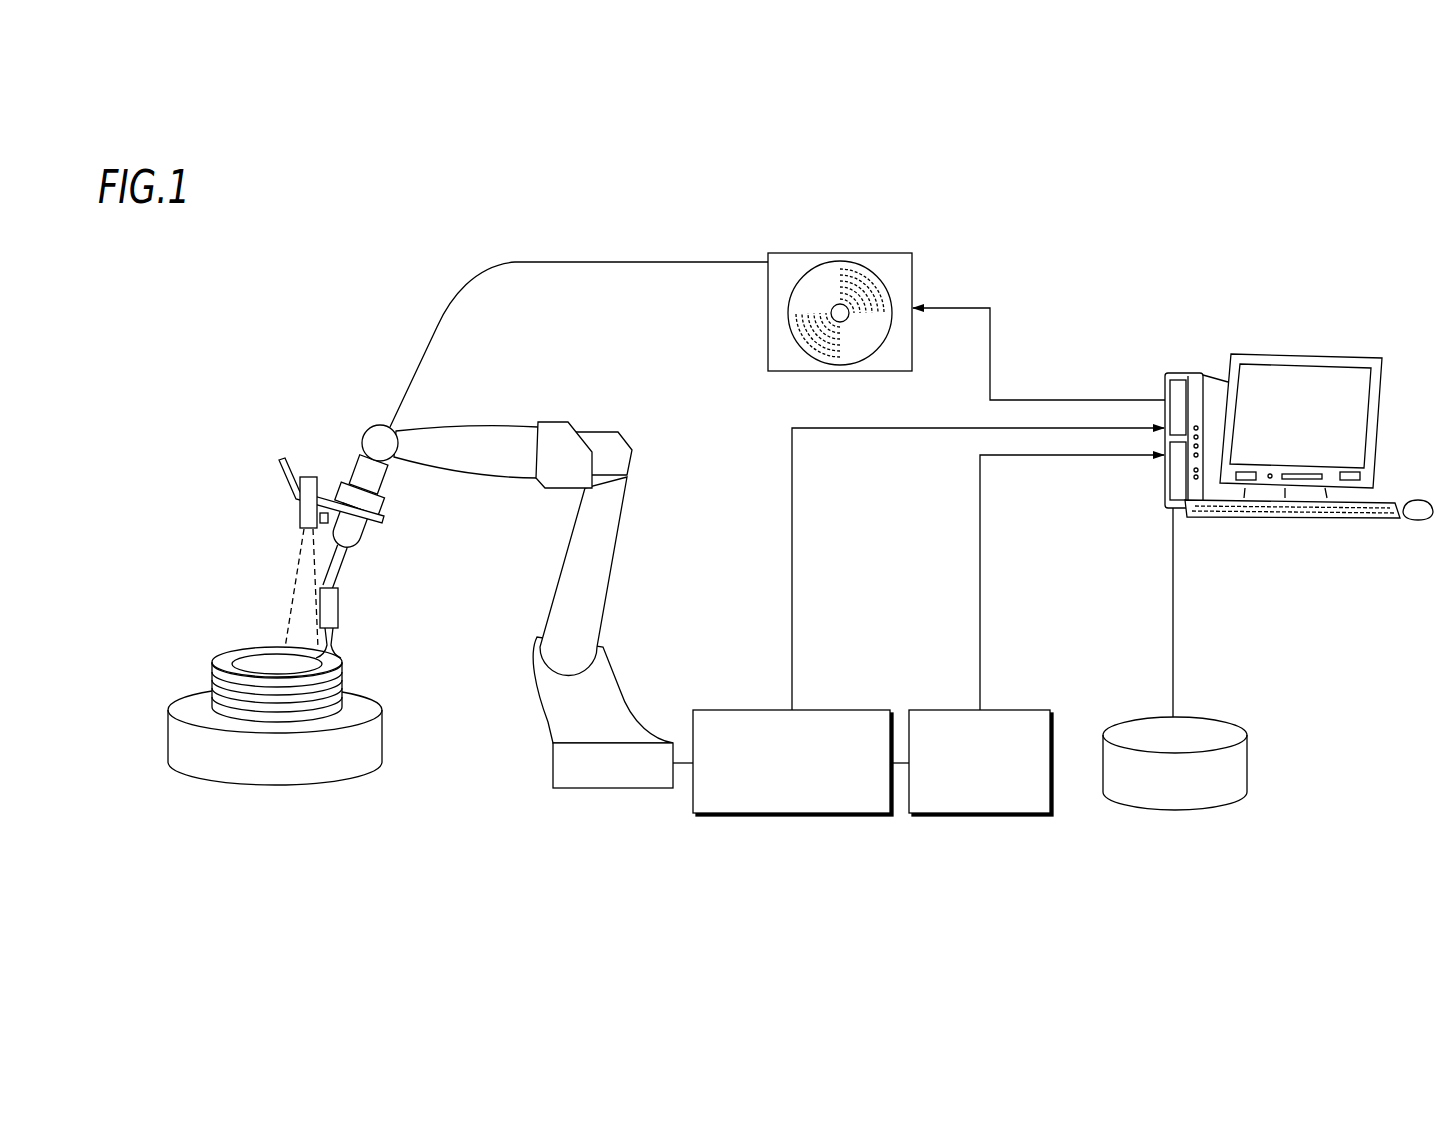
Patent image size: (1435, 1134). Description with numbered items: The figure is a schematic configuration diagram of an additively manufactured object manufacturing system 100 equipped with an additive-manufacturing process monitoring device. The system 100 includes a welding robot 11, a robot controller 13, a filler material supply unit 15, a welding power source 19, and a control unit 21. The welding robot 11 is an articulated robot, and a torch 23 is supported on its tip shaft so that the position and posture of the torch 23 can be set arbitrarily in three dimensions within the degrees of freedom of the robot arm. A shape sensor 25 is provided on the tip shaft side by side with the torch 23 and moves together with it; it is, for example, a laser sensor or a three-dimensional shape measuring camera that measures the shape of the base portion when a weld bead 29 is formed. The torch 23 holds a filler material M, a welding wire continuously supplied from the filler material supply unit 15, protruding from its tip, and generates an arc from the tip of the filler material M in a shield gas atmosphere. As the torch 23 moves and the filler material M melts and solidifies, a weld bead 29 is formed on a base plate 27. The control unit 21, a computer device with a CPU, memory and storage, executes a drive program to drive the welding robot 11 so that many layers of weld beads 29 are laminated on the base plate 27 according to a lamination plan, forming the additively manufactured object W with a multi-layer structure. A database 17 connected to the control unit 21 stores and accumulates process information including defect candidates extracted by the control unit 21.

The additively manufactured object manufacturing system 100 is at (1070, 246).
The welding robot 11 is at (620, 401).
The robot controller 13 is at (791, 815).
The filler material supply unit 15 is at (873, 253).
The database 17 is at (1175, 812).
The welding power source 19 is at (982, 815).
The control unit 21 is at (1343, 354).
The torch 23 is at (340, 606).
The shape sensor 25 is at (299, 510).
The base plate 27 is at (290, 785).
The weld bead 29 is at (345, 670).
The additively manufactured object W is at (230, 634).
The filler material M is at (640, 261).